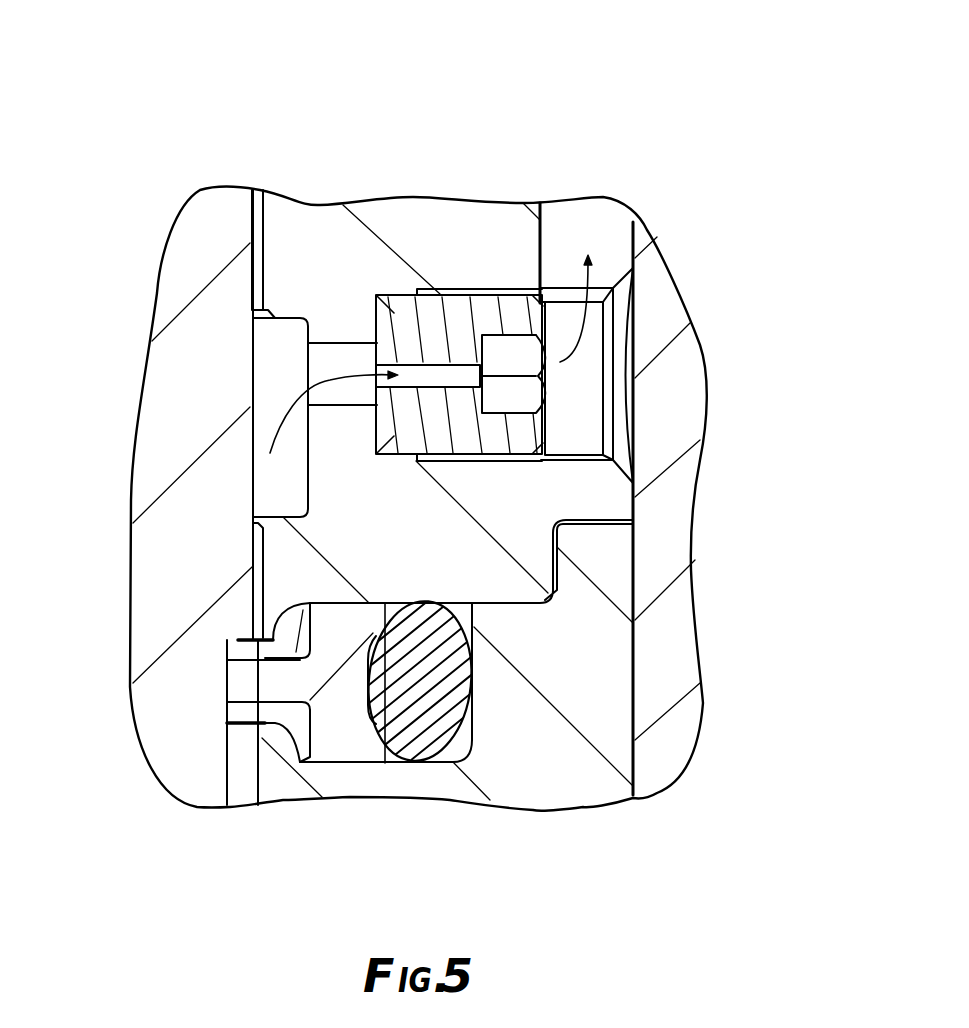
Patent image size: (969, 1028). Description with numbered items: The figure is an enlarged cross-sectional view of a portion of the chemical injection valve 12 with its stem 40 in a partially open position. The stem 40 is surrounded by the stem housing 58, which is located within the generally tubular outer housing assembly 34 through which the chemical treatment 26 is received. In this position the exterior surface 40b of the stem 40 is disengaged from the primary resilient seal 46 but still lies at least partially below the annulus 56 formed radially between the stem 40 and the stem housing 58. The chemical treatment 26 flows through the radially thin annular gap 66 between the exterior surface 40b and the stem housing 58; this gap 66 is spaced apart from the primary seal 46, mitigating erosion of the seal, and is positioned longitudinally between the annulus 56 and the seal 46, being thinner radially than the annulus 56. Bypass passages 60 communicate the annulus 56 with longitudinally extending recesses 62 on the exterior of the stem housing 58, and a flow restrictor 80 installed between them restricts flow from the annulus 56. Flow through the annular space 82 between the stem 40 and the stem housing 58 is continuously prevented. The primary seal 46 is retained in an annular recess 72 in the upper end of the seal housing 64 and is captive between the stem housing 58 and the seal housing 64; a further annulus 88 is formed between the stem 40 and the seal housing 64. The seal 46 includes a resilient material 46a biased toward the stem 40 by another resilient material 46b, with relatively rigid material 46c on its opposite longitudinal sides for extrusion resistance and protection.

The chemical injection valve 12 is at (718, 72).
The stem 40 is at (195, 193).
The annular space 82 is at (257, 195).
The stem housing 58 is at (397, 197).
The flow restrictor 80 is at (457, 292).
The longitudinally extending recess 62 is at (572, 205).
The outer housing assembly 34 is at (677, 277).
The annulus 56 is at (282, 343).
The bypass passage 60 is at (344, 350).
The chemical treatment 26 is at (290, 403).
The exterior surface of the stem 40b is at (266, 552).
The annular gap 66 is at (270, 580).
The rigid material 46c is at (280, 628).
The resilient material 46a is at (272, 683).
The primary resilient seal 46 is at (480, 690).
The annulus 88 is at (244, 790).
The annular recess 72 is at (322, 752).
The resilient material 46b is at (452, 768).
The seal housing 64 is at (566, 810).